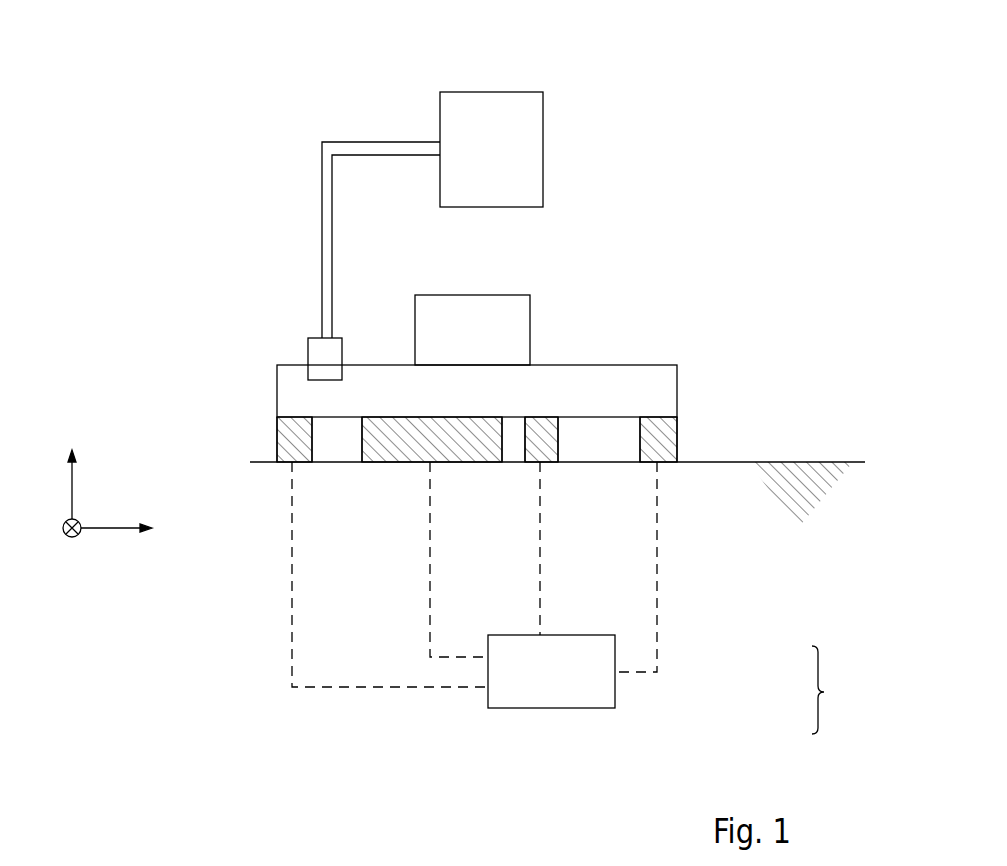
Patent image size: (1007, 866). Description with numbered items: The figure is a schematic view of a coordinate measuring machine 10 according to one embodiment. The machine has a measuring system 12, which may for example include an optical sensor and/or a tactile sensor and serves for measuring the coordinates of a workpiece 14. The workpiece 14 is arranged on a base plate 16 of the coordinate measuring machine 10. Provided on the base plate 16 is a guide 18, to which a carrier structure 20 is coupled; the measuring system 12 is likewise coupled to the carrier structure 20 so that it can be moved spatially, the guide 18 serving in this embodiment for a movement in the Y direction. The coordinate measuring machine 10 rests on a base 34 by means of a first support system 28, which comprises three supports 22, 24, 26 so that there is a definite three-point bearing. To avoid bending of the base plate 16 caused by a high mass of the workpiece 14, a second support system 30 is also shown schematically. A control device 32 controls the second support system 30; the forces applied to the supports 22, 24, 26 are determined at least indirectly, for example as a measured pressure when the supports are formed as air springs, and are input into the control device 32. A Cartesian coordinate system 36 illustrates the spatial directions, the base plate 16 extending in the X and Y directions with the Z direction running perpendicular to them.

The coordinate measuring machine 10 is at (683, 86).
The measuring system 12 is at (528, 148).
The workpiece 14 is at (515, 325).
The base plate 16 is at (660, 398).
The guide 18 is at (316, 347).
The carrier structure 20 is at (380, 152).
The support 22 is at (292, 445).
The support 24 is at (536, 444).
The support 26 is at (663, 444).
The first support system 28 is at (820, 690).
The second support system 30 is at (404, 446).
The control device 32 is at (563, 682).
The base 34 is at (800, 466).
The Cartesian coordinate system 36 is at (80, 516).